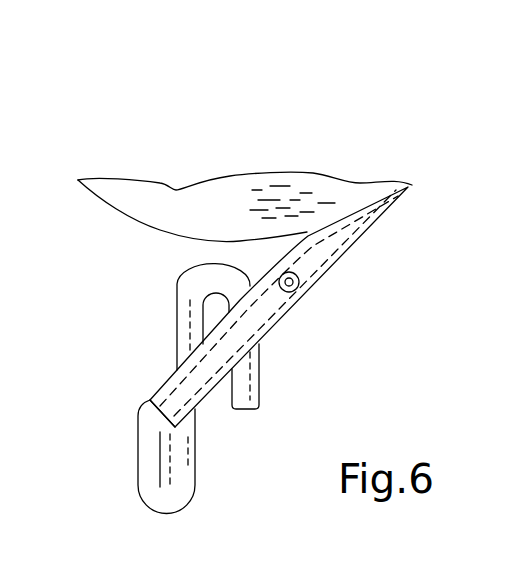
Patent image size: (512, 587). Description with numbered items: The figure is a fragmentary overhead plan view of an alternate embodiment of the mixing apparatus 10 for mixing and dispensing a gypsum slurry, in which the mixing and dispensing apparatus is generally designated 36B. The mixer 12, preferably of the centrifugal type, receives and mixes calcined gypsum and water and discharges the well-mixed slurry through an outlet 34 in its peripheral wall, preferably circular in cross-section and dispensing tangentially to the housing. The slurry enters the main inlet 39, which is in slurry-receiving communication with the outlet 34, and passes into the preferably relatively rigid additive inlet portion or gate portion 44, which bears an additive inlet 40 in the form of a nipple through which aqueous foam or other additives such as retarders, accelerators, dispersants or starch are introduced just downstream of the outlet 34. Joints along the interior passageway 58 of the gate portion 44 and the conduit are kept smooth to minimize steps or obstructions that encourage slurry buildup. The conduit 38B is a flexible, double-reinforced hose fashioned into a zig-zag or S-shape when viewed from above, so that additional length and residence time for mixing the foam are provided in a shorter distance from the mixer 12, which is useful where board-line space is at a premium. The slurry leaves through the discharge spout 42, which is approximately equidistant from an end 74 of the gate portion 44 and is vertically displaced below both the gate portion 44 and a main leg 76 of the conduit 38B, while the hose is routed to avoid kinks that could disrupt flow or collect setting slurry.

The mixing apparatus 10 is at (155, 127).
The mixer 12 is at (262, 192).
The outlet 34 is at (340, 225).
The main inlet 39 is at (404, 195).
The additive inlet 40 is at (300, 278).
The interior passageway 58 is at (273, 320).
The additive inlet portion 44 is at (207, 368).
The end 74 is at (160, 425).
The discharge spout 42 is at (247, 410).
The conduit 38B is at (153, 483).
The main leg 76 is at (185, 448).
The mixing and dispensing apparatus 36B is at (323, 403).